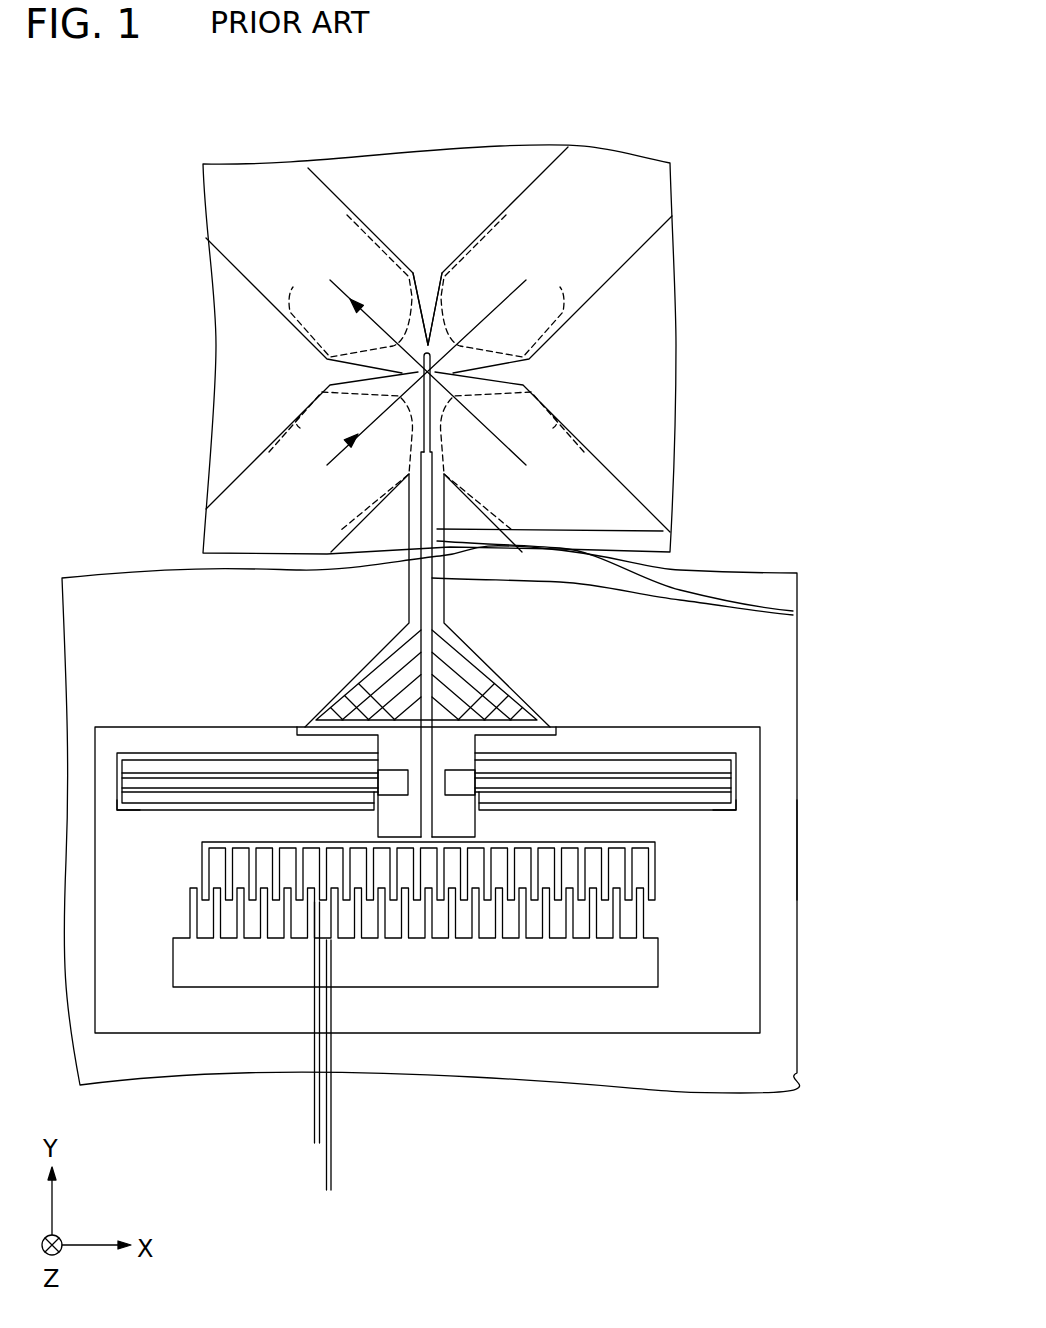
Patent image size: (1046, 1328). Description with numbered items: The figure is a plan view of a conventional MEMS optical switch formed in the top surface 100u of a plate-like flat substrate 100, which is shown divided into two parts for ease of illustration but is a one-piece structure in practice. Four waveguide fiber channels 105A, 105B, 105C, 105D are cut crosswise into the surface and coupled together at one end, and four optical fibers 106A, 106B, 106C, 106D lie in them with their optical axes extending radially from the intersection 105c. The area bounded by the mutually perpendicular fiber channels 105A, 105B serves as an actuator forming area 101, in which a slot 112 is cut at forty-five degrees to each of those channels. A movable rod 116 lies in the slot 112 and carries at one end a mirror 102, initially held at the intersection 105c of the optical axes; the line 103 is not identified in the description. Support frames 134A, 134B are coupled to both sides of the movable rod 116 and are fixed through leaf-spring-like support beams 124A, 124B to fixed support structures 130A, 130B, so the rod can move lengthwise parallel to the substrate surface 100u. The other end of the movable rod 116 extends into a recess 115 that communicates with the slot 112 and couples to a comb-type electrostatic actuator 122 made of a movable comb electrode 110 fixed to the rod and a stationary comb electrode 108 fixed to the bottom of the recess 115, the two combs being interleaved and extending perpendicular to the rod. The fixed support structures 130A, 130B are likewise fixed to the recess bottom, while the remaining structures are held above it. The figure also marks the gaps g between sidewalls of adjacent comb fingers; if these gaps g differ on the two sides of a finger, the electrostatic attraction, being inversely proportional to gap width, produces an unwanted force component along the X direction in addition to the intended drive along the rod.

The substrate 100 is at (658, 247).
The top surface 100u is at (808, 843).
The actuator forming area 101 is at (185, 1065).
The mirror 102 is at (445, 395).
The lower magnetic layer 103 is at (663, 531).
The fiber channel 105A is at (245, 465).
The fiber channel 105B is at (602, 487).
The fiber channel 105C is at (343, 208).
The fiber channel 105D is at (527, 195).
The intersection 105c is at (443, 345).
The optical fiber 106A is at (292, 422).
The optical fiber 106B is at (561, 422).
The optical fiber 106C is at (287, 287).
The optical fiber 106D is at (565, 288).
The stationary comb electrode 108 is at (645, 913).
The movable comb electrode 110 is at (657, 880).
The slot 112 is at (406, 583).
The recess 115 is at (745, 882).
The movable rod 116 is at (793, 612).
The comb-type electrostatic actuator 122 is at (491, 1022).
The support beam 124A is at (241, 800).
The support beam 124B is at (612, 800).
The fixed support structure 130A is at (394, 776).
The fixed support structure 130B is at (460, 776).
The support frame 134A is at (150, 813).
The support frame 134B is at (688, 813).
The gap g is at (327, 1123).